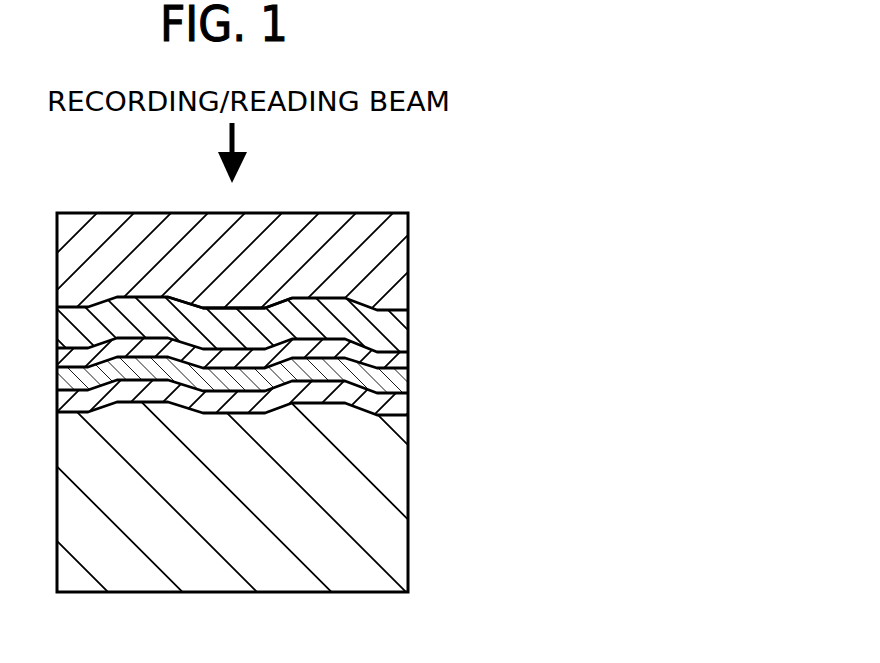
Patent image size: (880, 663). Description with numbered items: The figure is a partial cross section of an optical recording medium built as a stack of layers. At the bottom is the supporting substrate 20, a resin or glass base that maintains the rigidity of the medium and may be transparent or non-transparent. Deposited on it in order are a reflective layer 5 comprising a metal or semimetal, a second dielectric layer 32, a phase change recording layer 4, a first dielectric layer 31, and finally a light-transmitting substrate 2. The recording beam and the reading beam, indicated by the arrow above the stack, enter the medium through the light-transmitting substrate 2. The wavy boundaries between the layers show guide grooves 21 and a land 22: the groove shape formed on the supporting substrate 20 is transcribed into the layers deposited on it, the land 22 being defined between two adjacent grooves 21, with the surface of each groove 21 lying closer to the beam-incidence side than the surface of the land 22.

The light-transmitting substrate 2 is at (407, 255).
The guide groove 21 is at (158, 295).
The land 22 is at (237, 297).
The first dielectric layer 31 is at (407, 325).
The phase change recording layer 4 is at (407, 362).
The second dielectric layer 32 is at (407, 382).
The reflective layer 5 is at (407, 403).
The supporting substrate 20 is at (408, 448).